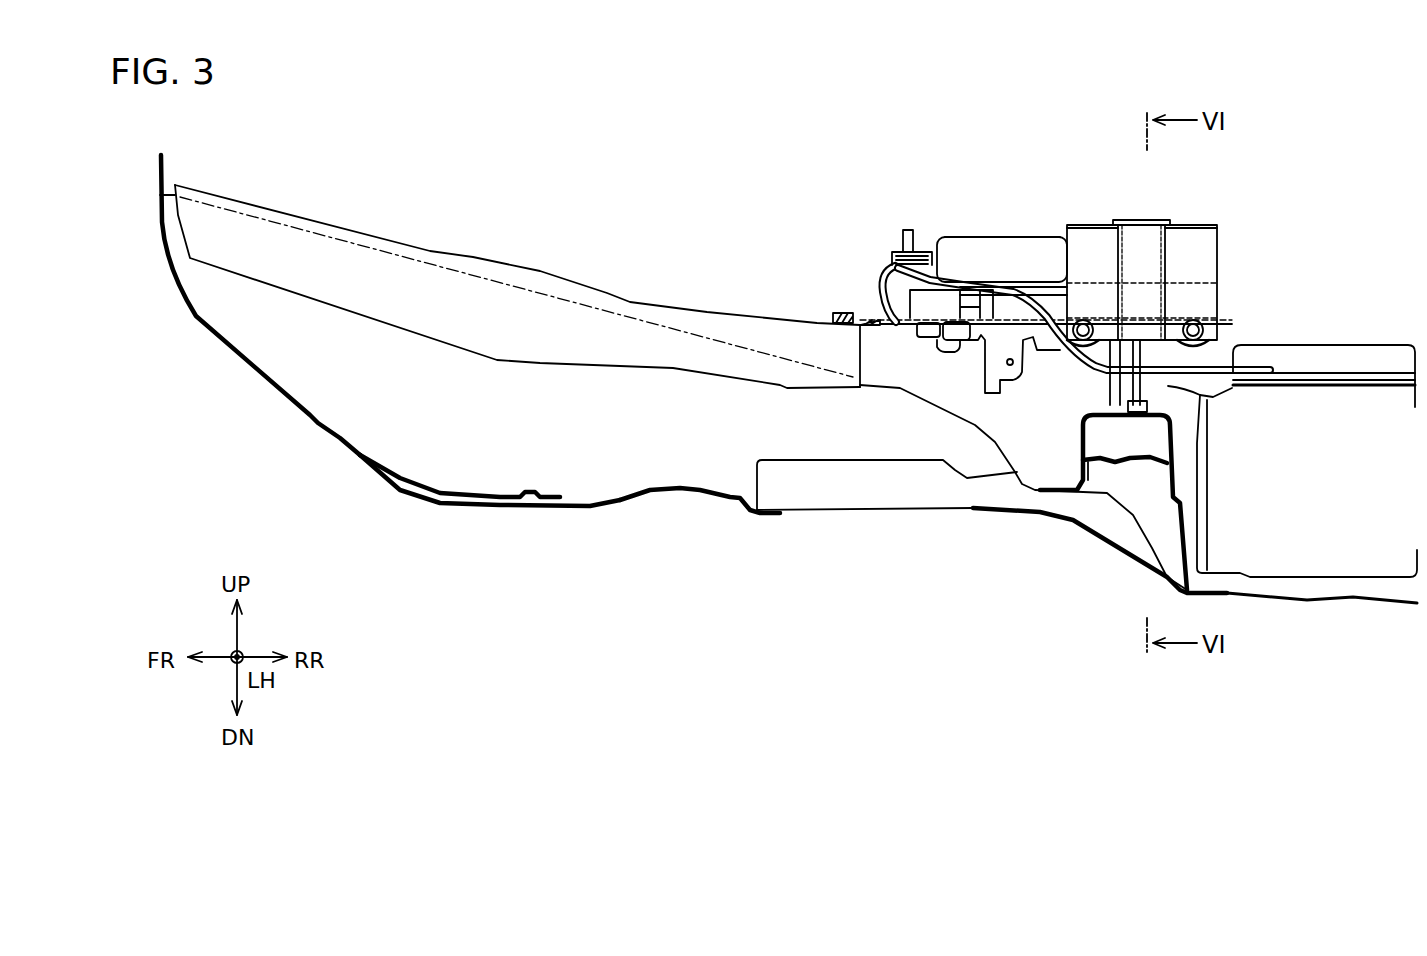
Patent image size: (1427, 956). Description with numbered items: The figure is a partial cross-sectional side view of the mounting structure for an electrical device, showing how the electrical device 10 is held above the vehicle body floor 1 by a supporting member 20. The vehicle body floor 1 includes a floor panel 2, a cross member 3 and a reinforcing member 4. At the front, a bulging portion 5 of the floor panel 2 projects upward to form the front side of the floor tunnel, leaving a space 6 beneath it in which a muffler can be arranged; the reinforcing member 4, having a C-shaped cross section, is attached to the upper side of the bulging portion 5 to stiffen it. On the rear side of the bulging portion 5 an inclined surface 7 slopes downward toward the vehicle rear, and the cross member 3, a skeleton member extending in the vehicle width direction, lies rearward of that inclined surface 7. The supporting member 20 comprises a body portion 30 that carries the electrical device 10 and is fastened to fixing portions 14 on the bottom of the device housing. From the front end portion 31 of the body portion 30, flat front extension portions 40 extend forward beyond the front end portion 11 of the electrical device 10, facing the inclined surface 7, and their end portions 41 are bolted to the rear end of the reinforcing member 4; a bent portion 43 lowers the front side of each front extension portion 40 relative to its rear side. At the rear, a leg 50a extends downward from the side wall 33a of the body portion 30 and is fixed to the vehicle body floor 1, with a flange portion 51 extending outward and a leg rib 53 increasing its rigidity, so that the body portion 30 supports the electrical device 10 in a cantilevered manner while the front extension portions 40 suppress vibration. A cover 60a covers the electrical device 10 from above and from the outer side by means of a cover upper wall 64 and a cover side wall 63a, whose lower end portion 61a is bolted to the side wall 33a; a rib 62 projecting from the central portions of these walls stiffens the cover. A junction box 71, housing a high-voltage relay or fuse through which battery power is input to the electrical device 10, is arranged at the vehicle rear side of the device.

The vehicle body floor 1 is at (580, 508).
The floor panel 2 is at (705, 500).
The cross member 3 is at (1083, 440).
The reinforcing member 4 is at (540, 270).
The bulging portion 5 is at (452, 447).
The space 6 is at (355, 417).
The inclined surface 7 is at (918, 392).
The electrical device 10 is at (998, 250).
The end portion 11 is at (957, 240).
The fixing portions 14 is at (950, 290).
The supporting member 20 is at (1217, 248).
The body portion 30 is at (1013, 313).
The end portion 31 is at (903, 258).
The side wall 33a is at (995, 333).
The front extension portions 40 is at (882, 317).
The end portions 41 is at (833, 313).
The bent portion 43 is at (870, 320).
The leg 50a is at (1157, 400).
The flange portion 51 is at (1107, 400).
The leg rib 53 is at (1167, 388).
The cover 60a is at (1217, 243).
The lower end portion 61a is at (1213, 330).
The rib 62 is at (1145, 235).
The cover side wall 63a is at (1210, 273).
The cover upper wall 64 is at (1090, 225).
The junction box 71 is at (1352, 365).